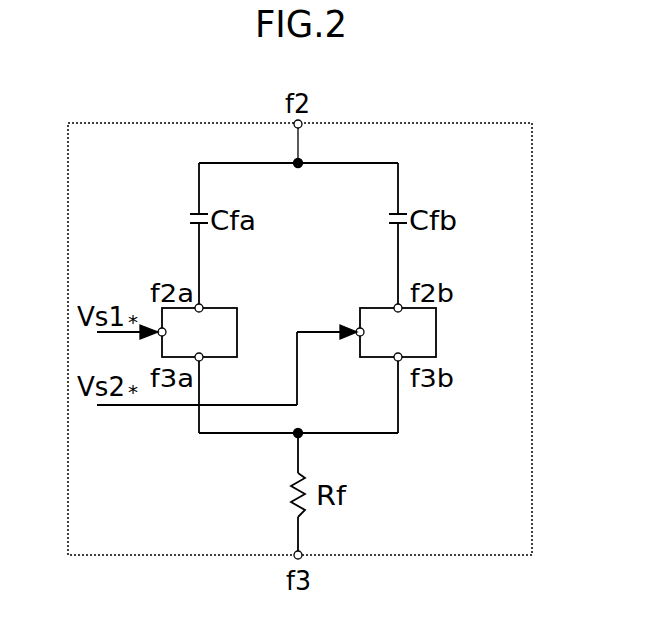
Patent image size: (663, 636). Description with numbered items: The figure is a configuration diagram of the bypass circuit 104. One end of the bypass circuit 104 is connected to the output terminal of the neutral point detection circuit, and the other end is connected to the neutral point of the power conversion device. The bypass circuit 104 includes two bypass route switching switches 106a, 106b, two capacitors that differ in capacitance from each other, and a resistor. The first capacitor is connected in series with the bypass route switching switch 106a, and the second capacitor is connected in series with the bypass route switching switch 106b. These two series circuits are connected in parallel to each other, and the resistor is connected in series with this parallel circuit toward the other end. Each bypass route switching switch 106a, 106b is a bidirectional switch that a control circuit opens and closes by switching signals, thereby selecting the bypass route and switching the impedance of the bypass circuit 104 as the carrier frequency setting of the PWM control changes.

The bypass circuit 104 is at (372, 123).
The bypass route switching switch 106a is at (237, 308).
The bypass route switching switch 106b is at (428, 337).